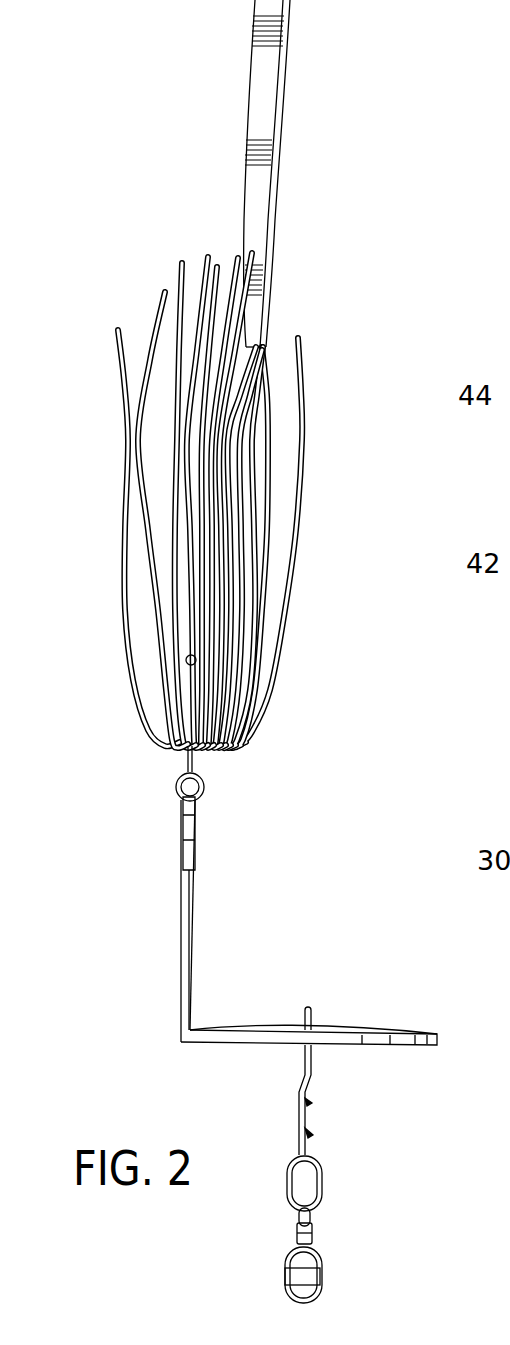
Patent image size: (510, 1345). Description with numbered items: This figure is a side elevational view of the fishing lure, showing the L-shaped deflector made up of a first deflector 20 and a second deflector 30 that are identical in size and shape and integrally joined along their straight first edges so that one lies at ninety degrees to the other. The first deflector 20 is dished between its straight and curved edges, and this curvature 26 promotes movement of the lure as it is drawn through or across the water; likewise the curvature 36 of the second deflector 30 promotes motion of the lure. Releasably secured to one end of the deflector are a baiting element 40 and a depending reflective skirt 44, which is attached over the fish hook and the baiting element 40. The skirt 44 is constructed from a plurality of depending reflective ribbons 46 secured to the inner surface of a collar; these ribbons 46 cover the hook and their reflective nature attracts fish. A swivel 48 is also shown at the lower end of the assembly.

The first deflector 20 is at (340, 1048).
The curvature 26 is at (205, 916).
The second deflector 30 is at (183, 977).
The curvature 36 is at (340, 1030).
The baiting element 40 is at (258, 92).
The skirt 44 is at (160, 500).
The depending reflective ribbons 46 is at (127, 432).
The swivel 48 is at (312, 1240).